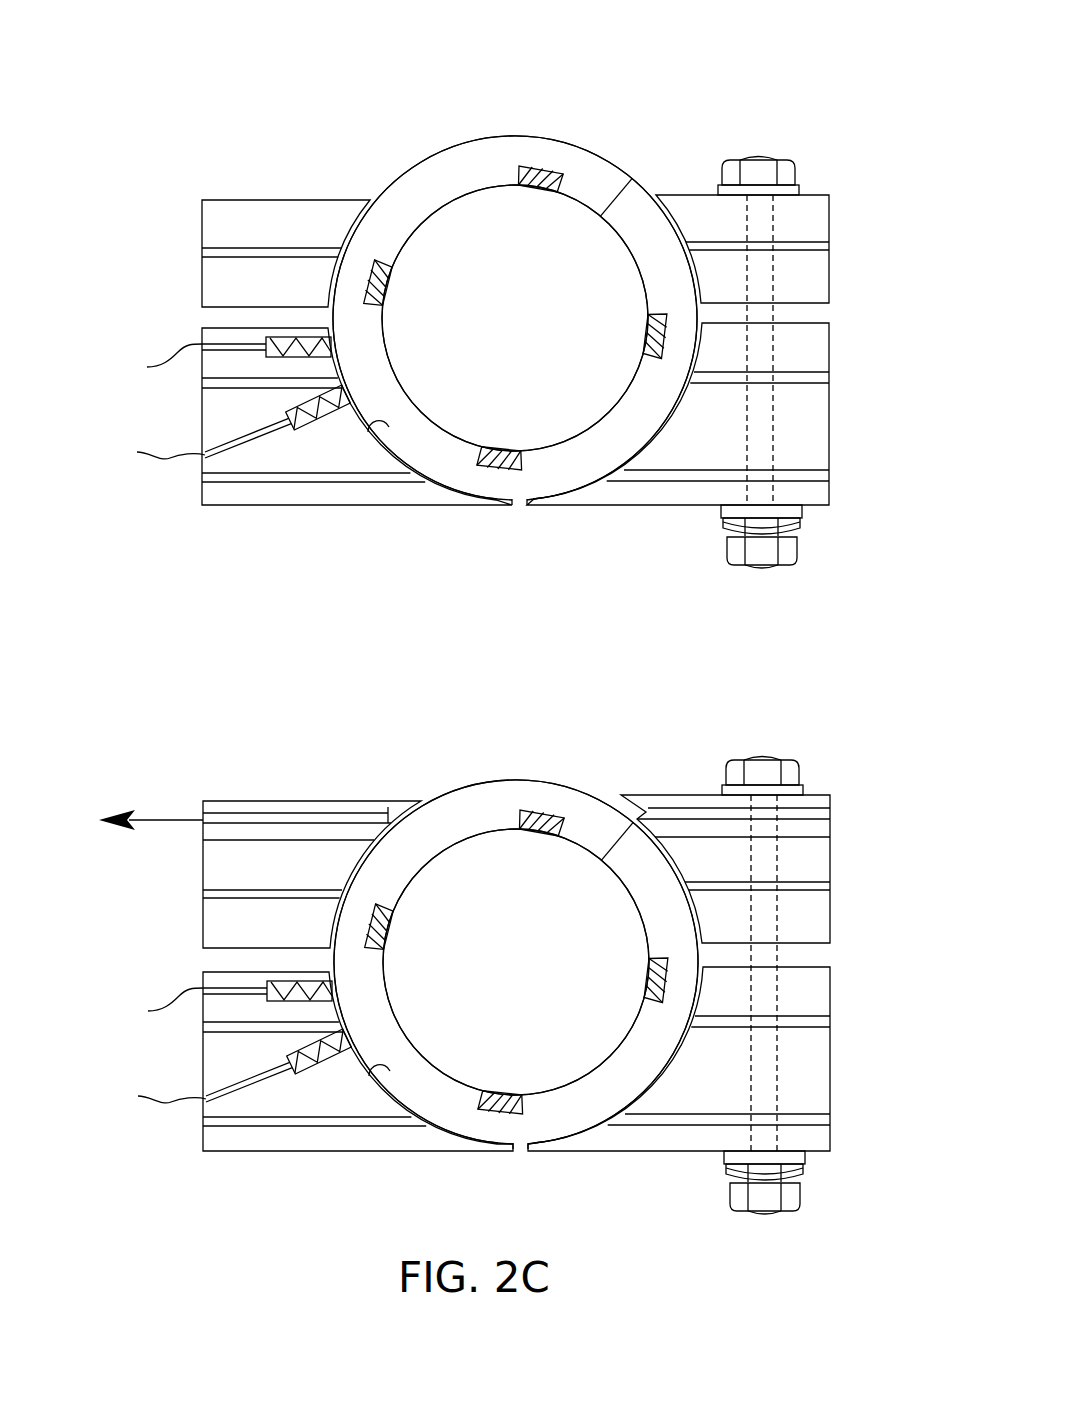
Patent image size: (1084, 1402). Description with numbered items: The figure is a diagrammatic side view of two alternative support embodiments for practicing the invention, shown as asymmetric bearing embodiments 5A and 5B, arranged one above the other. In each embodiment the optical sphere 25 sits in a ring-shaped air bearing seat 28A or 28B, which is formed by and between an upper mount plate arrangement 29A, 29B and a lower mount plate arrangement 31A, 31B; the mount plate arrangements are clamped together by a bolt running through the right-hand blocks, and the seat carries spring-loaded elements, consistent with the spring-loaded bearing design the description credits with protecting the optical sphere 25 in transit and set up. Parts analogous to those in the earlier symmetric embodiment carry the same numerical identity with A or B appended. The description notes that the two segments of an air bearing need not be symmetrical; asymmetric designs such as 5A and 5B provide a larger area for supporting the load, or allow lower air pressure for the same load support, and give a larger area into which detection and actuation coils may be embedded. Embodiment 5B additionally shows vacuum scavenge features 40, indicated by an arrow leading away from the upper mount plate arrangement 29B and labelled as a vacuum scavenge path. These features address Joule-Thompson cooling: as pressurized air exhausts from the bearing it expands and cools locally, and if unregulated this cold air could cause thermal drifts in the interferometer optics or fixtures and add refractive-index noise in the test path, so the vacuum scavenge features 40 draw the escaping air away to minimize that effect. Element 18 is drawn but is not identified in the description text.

The asymmetric support embodiment 5A is at (668, 101).
The asymmetric support embodiment 5B is at (488, 917).
The clamp ring 18 is at (568, 144).
The optical sphere 25 is at (438, 168).
The air bearing seat 28A is at (413, 413).
The air bearing seat 28B is at (325, 1083).
The upper mount plate arrangement 29A is at (806, 212).
The upper mount plate arrangement 29B is at (768, 986).
The lower mount plate arrangement 31A is at (810, 428).
The lower mount plate arrangement 31B is at (724, 1059).
The vacuum scavenge features 40 is at (142, 818).